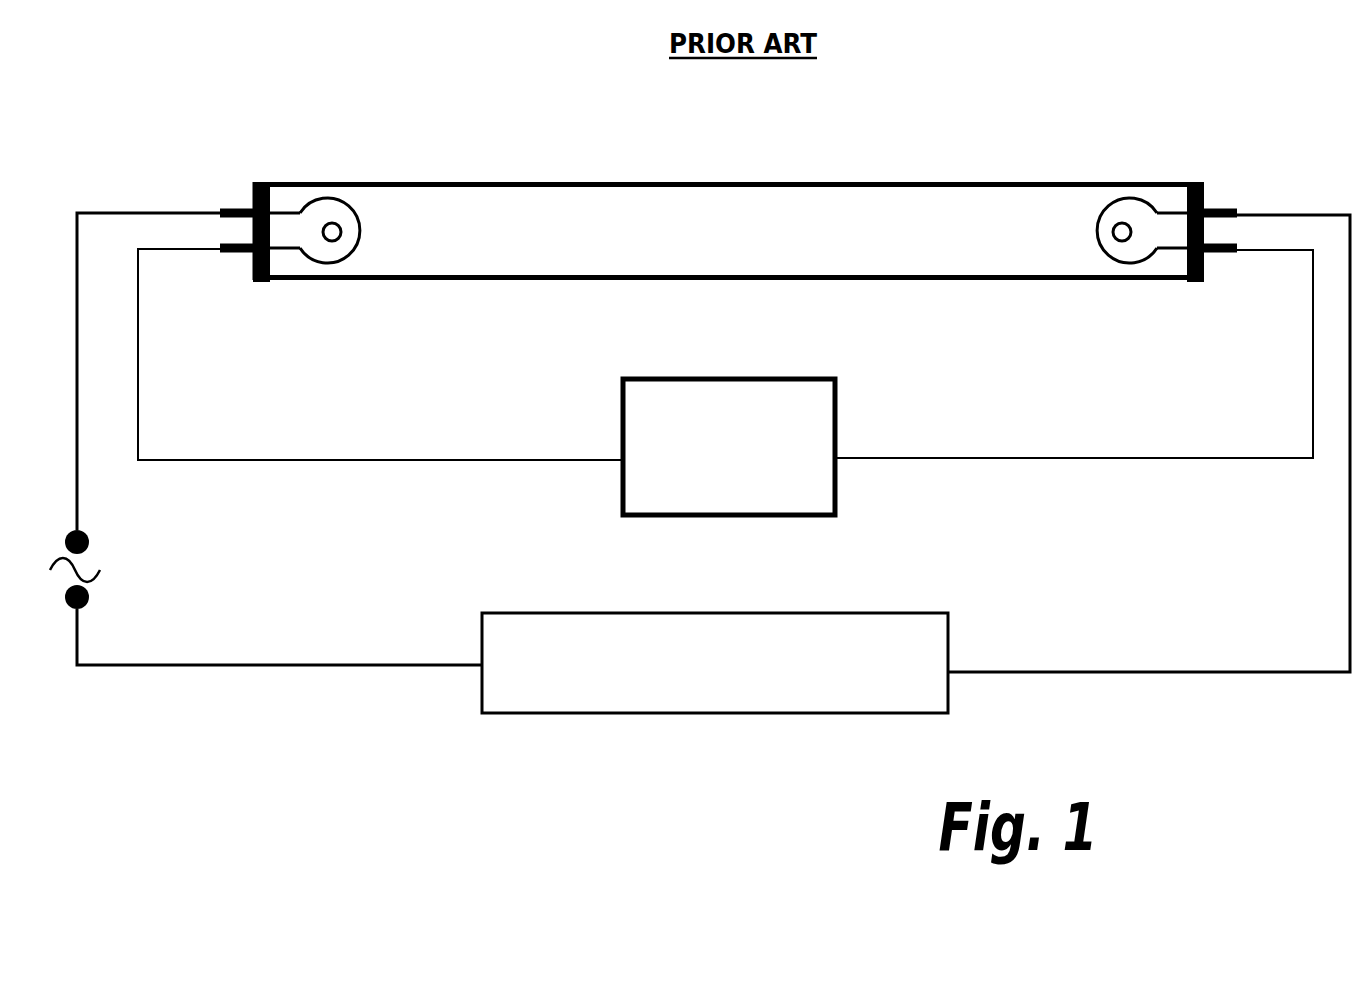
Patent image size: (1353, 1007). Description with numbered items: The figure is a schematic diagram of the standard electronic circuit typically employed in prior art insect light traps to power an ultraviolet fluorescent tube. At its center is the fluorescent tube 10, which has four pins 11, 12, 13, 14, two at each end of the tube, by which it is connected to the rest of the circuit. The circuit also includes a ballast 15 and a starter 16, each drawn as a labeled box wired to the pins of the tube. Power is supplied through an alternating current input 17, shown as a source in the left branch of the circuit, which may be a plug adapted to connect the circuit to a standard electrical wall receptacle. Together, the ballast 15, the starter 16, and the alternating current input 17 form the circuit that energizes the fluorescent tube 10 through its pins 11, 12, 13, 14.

The fluorescent tube 10 is at (472, 170).
The pin 11 is at (240, 207).
The pin 12 is at (247, 255).
The pin 13 is at (1217, 210).
The pin 14 is at (1217, 255).
The ballast 15 is at (945, 612).
The starter 16 is at (847, 437).
The alternating current input 17 is at (118, 563).